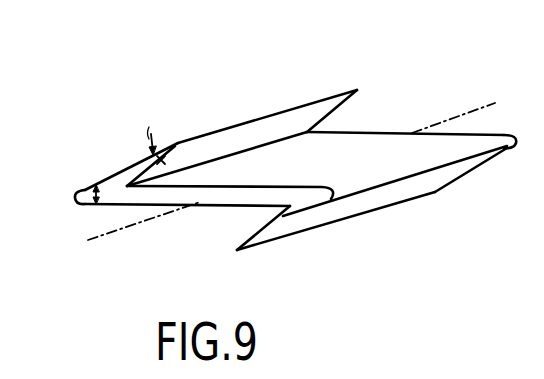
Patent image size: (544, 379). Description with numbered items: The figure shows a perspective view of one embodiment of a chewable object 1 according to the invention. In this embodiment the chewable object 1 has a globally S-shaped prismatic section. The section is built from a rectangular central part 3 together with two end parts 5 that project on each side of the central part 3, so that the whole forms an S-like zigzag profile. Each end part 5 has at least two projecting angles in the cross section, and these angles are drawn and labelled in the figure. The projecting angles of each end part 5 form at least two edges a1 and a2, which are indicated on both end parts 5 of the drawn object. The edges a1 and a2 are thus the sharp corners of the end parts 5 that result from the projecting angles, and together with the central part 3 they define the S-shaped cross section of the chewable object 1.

The chewable object 1 is at (247, 84).
The central part 3 is at (219, 206).
The end part 5 is at (126, 169).
The edge a1 is at (373, 254).
The edge a2 is at (440, 224).